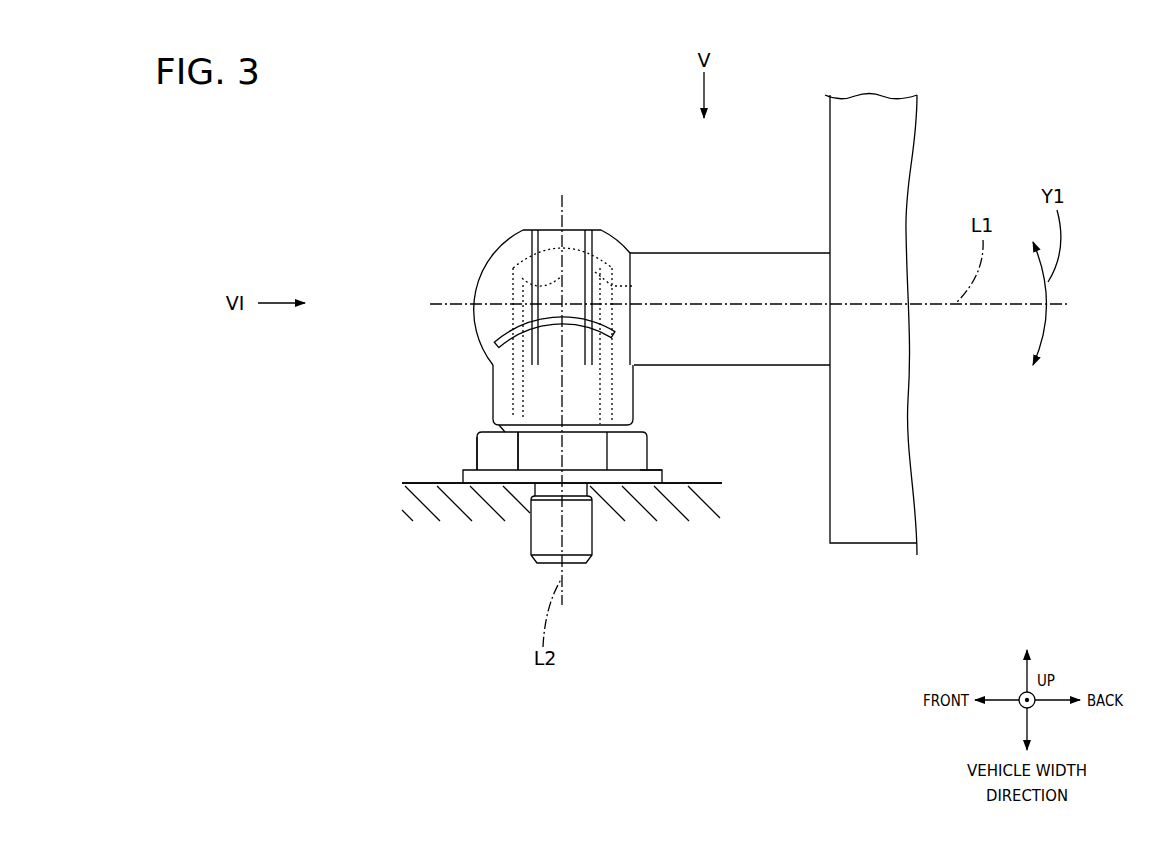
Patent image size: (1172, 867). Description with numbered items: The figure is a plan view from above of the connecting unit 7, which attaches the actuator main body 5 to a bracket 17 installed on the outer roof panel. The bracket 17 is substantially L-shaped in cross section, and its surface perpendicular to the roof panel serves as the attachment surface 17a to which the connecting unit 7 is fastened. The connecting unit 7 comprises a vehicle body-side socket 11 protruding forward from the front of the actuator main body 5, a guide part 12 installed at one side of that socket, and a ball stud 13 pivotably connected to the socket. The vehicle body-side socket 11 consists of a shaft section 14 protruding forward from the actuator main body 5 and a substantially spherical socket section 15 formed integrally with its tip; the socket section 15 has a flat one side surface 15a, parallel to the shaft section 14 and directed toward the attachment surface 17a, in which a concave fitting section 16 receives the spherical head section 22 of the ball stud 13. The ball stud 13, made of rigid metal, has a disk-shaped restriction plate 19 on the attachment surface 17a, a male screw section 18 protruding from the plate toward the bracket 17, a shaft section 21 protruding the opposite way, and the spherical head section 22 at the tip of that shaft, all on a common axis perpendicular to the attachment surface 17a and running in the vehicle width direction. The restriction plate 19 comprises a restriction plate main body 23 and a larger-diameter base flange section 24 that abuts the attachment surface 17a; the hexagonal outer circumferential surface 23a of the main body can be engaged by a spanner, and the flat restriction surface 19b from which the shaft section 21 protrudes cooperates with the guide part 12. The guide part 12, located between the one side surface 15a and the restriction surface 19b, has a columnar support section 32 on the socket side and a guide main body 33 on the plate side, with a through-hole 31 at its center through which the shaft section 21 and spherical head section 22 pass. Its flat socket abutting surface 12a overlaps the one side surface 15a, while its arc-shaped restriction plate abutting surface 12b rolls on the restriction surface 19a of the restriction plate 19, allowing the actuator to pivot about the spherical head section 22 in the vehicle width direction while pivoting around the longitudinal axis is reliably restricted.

The actuator main body 5 is at (872, 545).
The connecting unit 7 is at (737, 230).
The vehicle body-side socket 11 is at (587, 148).
The guide part 12 is at (362, 322).
The socket abutting surface 12a is at (637, 367).
The restriction plate abutting surface 12b is at (500, 430).
The ball stud 13 is at (462, 455).
The shaft section 14 is at (668, 252).
The socket section 15 is at (578, 231).
The one side surface 15a is at (493, 370).
The concave fitting section 16 is at (518, 270).
The bracket 17 is at (530, 541).
The attachment surface 17a is at (415, 483).
The male screw section 18 is at (593, 533).
The restriction plate 19 is at (650, 456).
The restriction surface 19a is at (620, 485).
The restriction surface 19b is at (480, 432).
The shaft section 21 is at (597, 380).
The spherical head section 22 is at (612, 286).
The restriction plate main body 23 is at (503, 455).
The outer circumferential surface 23a is at (493, 457).
The base flange section 24 is at (653, 483).
The through-hole 31 is at (613, 385).
The support section 32 is at (545, 430).
The guide main body 33 is at (493, 405).